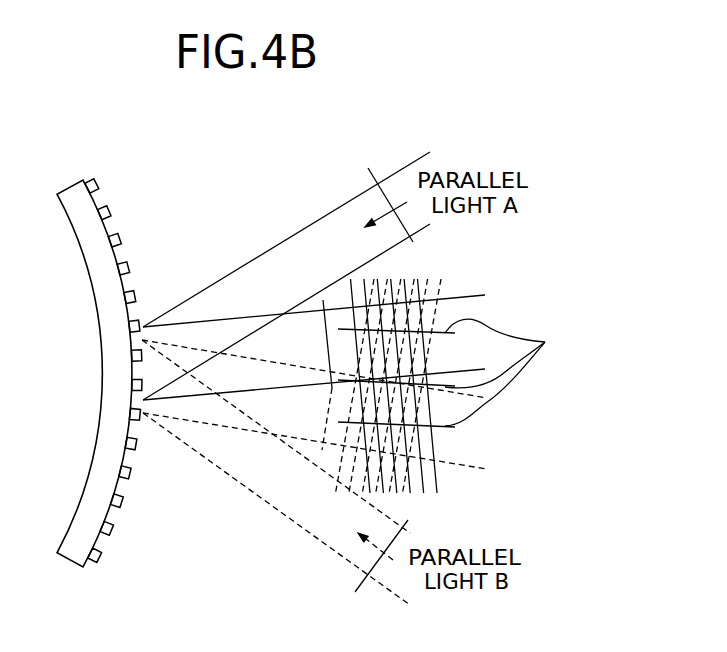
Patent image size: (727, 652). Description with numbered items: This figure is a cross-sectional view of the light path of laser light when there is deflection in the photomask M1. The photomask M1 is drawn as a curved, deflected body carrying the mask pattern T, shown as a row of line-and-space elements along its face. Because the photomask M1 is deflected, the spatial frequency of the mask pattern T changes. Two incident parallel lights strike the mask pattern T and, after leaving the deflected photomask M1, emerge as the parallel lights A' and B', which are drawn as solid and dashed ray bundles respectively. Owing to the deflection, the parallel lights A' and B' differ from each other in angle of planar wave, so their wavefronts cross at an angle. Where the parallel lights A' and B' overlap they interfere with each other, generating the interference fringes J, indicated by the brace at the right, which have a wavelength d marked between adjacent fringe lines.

The photomask M1 is at (71, 182).
The mask pattern T is at (103, 181).
The parallel light A' is at (314, 347).
The parallel light B' is at (314, 404).
The interference fringes J is at (502, 372).
The wavelength of interference fringes d is at (450, 342).